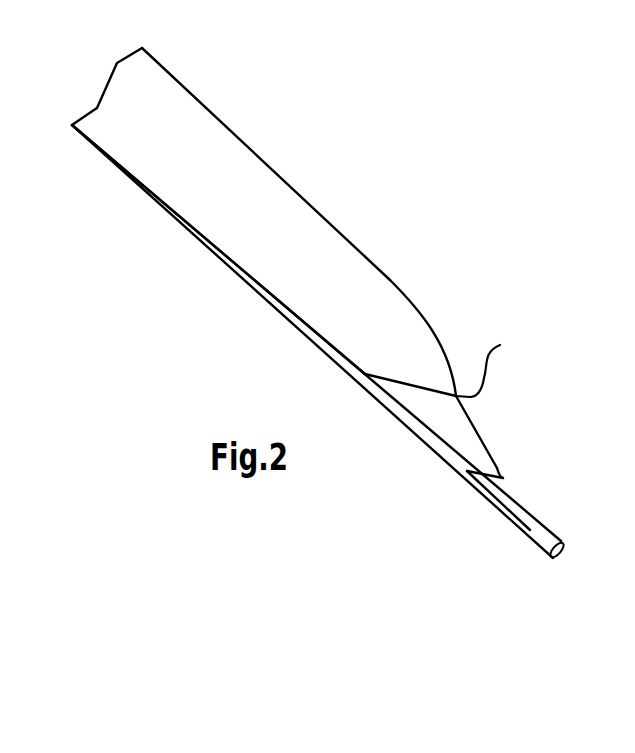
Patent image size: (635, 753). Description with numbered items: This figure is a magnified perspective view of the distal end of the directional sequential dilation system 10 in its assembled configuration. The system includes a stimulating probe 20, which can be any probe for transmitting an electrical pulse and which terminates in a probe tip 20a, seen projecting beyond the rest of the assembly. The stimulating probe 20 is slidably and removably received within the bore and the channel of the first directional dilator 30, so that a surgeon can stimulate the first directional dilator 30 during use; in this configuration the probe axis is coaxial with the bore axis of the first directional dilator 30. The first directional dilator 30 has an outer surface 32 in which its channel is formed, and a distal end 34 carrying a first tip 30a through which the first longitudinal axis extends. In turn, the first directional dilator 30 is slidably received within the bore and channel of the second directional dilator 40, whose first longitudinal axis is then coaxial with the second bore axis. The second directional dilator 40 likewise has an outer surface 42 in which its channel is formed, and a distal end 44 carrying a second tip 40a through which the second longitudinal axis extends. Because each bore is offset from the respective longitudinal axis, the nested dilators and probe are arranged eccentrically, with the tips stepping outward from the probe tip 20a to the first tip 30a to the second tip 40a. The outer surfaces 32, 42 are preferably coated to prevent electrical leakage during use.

The directional sequential dilation system 10 is at (448, 202).
The stimulating probe 20 is at (347, 373).
The probe tip 20a is at (555, 559).
The first directional dilator 30 is at (525, 427).
The first tip 30a is at (503, 477).
The outer surface 32 is at (437, 407).
The distal end 34 is at (467, 470).
The second directional dilator 40 is at (308, 222).
The second tip 40a is at (500, 364).
The outer surface 42 is at (305, 227).
The distal end 44 is at (422, 347).